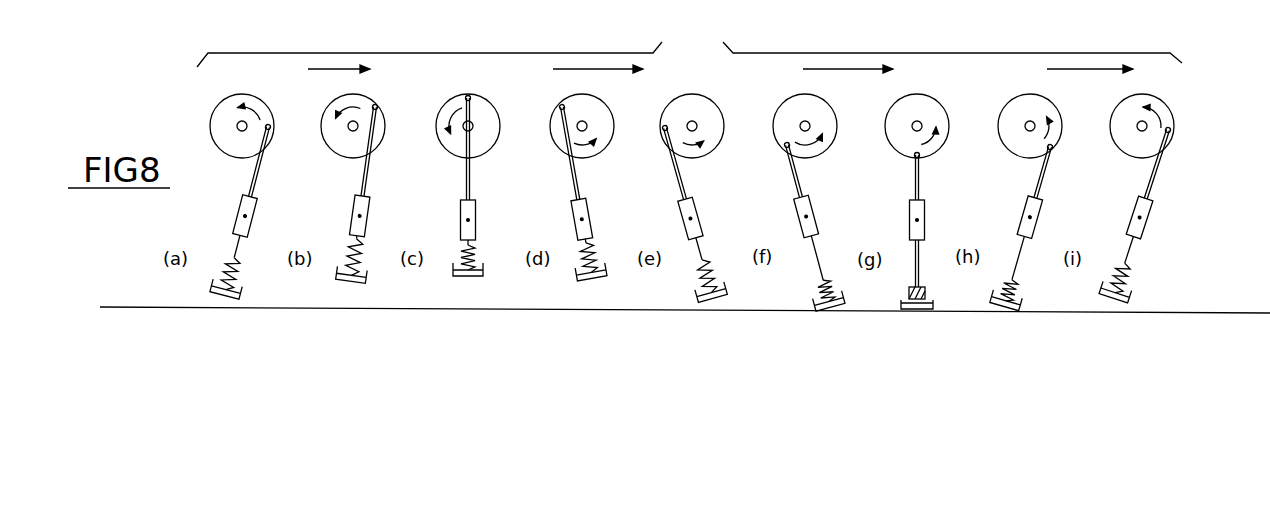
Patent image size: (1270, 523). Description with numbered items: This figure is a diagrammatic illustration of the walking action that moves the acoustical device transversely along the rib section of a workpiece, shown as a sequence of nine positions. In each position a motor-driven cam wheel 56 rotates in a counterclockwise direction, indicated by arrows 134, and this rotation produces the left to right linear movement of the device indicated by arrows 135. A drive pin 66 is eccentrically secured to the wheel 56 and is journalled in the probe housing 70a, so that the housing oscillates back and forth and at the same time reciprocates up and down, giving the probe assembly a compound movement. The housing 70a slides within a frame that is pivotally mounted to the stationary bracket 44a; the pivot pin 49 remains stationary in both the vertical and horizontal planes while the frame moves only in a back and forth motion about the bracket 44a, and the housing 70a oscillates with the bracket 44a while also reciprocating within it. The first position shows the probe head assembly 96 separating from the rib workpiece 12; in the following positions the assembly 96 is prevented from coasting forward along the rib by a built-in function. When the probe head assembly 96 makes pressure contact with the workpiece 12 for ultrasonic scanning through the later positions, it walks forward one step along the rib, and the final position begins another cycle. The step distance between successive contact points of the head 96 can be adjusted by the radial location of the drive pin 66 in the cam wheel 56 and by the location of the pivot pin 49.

The arrows indicating linear movement 135 is at (330, 69).
The arrows indicating counterclockwise motion 134 is at (253, 108).
The drive pin assembly wheel 56 is at (350, 97).
The drive pin 66 is at (466, 97).
The probe housing 70a is at (356, 173).
The pivot pin 49 is at (243, 219).
The stationary bracket 44a is at (353, 218).
The probe head assembly 96 is at (205, 268).
The rib workpiece 12 is at (1172, 313).